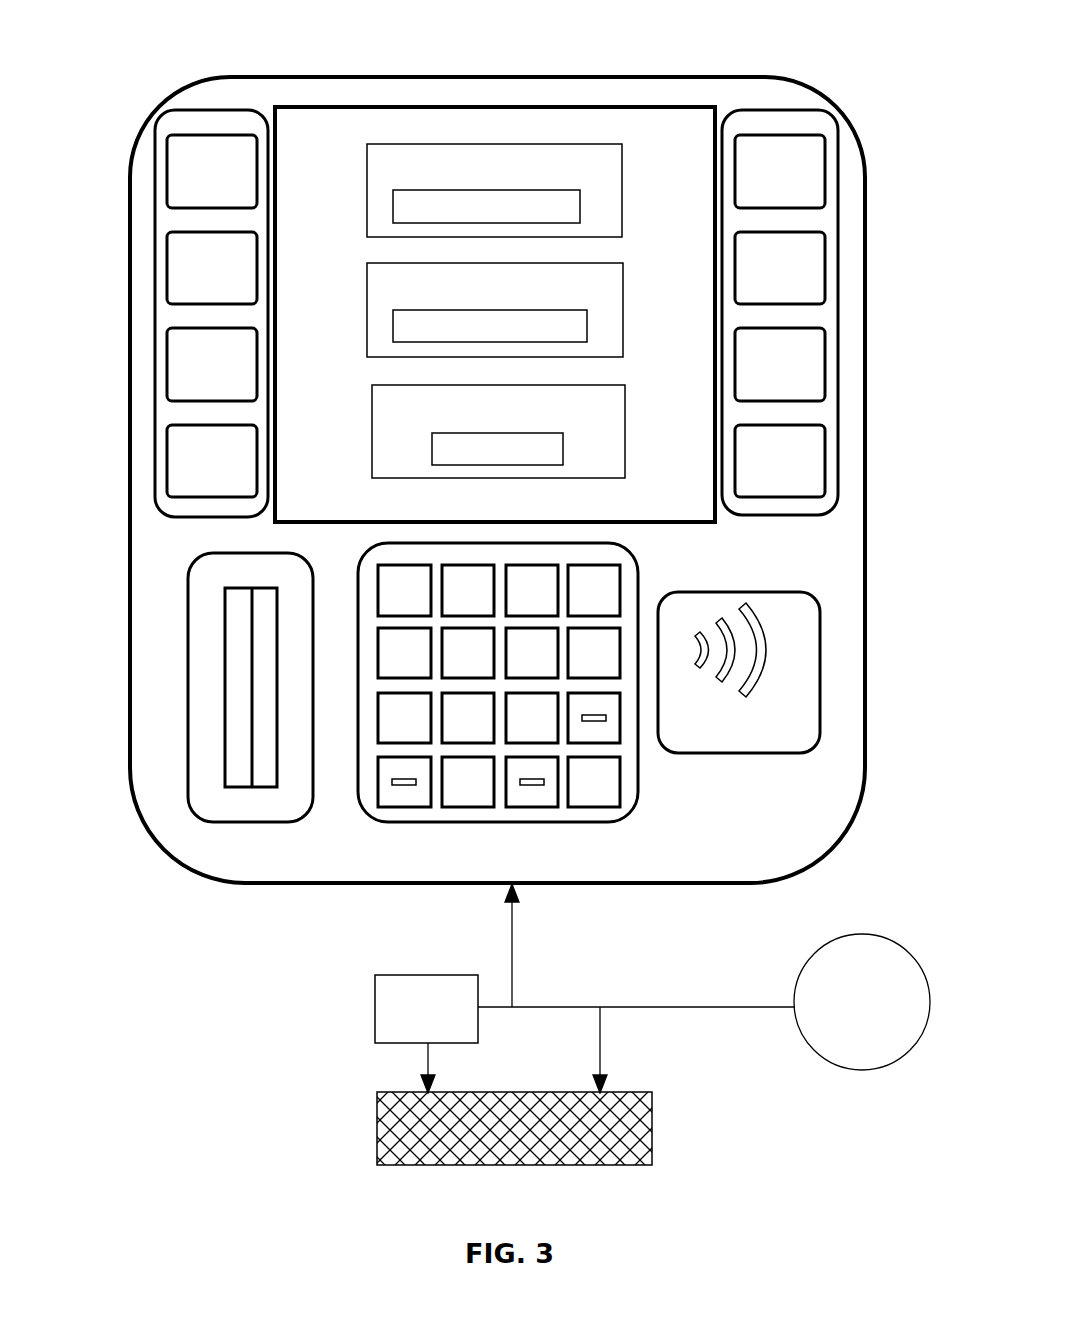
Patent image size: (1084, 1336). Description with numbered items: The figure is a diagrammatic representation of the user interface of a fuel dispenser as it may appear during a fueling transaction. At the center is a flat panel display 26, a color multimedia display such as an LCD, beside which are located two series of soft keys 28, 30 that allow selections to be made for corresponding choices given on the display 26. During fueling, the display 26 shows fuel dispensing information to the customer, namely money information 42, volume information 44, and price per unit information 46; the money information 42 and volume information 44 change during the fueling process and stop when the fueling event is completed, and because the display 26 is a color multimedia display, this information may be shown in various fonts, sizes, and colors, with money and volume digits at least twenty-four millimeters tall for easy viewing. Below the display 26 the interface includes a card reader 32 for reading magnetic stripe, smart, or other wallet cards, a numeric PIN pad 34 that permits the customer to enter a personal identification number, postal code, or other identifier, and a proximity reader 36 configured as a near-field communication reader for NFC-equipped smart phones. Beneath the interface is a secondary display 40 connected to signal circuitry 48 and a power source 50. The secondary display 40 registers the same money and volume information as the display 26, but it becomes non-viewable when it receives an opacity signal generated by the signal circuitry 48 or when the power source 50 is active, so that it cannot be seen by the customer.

The flat panel display 26 is at (668, 140).
The soft keys 28 is at (222, 91).
The soft keys 30 is at (782, 537).
The card reader 32 is at (188, 752).
The PIN pad 34 is at (630, 775).
The proximity reader 36 is at (798, 687).
The secondary display 40 is at (377, 1122).
The money information 42 is at (367, 212).
The volume information 44 is at (623, 296).
The price per unit information 46 is at (625, 406).
The signal circuitry 48 is at (383, 975).
The power source 50 is at (862, 933).